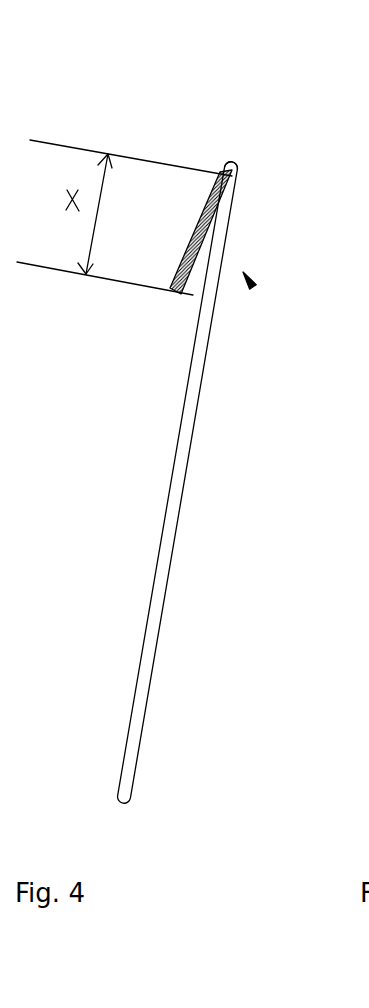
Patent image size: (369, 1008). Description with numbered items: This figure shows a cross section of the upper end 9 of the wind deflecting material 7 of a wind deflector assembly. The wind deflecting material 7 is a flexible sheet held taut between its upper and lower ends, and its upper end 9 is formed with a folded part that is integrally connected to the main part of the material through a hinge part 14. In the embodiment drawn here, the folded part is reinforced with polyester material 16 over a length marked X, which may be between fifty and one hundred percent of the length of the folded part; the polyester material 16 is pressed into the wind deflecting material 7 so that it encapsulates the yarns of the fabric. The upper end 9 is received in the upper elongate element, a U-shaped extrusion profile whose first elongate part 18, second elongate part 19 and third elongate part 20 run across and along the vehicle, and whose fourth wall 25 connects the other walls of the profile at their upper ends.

The wind deflecting material 7 is at (138, 702).
The upper end 9 is at (254, 286).
The hinge part 14 is at (227, 167).
The polyester material 16 is at (203, 220).
The first elongate part 18 is at (0, 97).
The second elongate part 19 is at (0, 97).
The third elongate part 20 is at (0, 97).
The fourth wall 25 is at (0, 163).